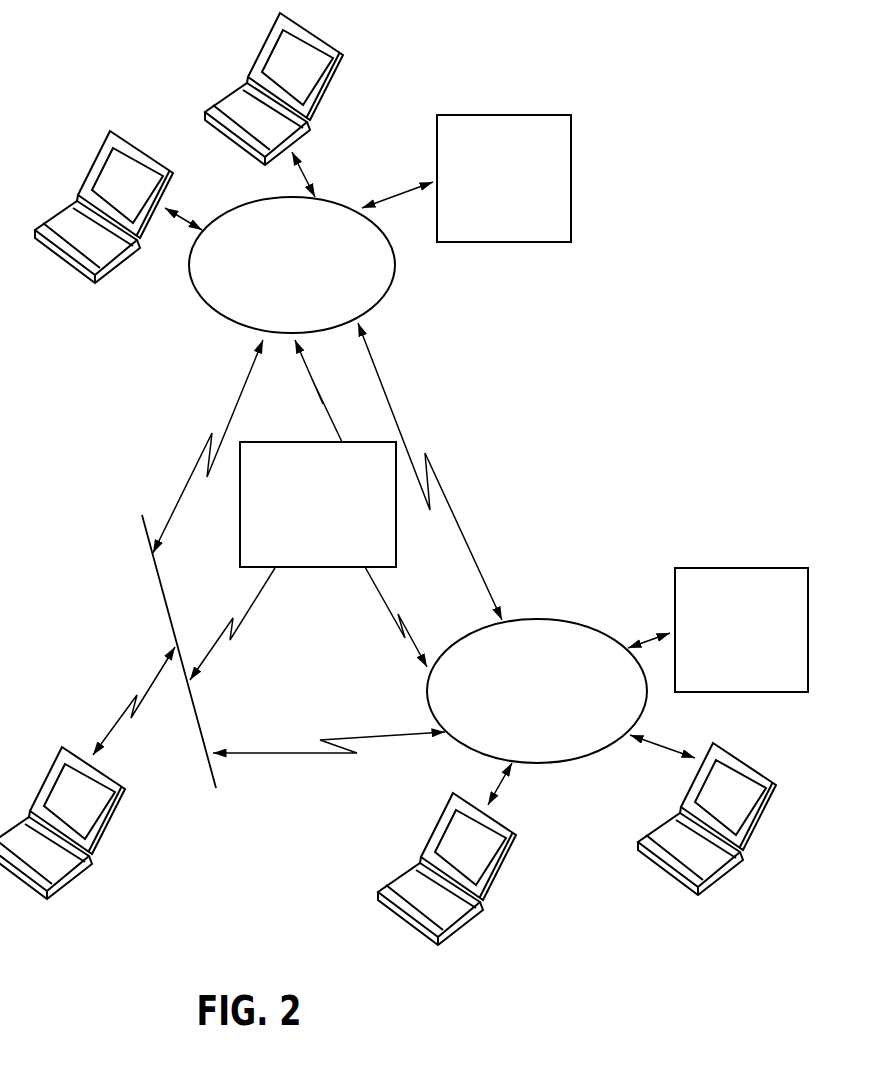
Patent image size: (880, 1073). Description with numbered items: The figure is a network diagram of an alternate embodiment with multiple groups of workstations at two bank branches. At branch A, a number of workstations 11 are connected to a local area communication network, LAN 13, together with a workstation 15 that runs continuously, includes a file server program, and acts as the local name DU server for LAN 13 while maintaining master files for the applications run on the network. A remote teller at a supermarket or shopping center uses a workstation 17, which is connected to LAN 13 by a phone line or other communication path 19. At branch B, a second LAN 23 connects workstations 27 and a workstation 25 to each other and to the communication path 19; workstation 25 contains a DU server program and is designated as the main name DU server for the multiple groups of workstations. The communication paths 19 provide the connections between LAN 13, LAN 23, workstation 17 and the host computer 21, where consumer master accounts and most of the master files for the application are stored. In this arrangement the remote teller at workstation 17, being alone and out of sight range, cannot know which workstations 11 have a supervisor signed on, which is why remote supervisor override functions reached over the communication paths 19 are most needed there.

The workstation 11 is at (505, 865).
The local area communication network (LAN) 13 is at (538, 620).
The workstation 15 is at (780, 567).
The workstation 17 is at (115, 820).
The communication path 19 is at (252, 365).
The host computer 21 is at (312, 567).
The LAN 23 is at (208, 308).
The workstation 25 is at (525, 115).
The workstation 27 is at (325, 98).